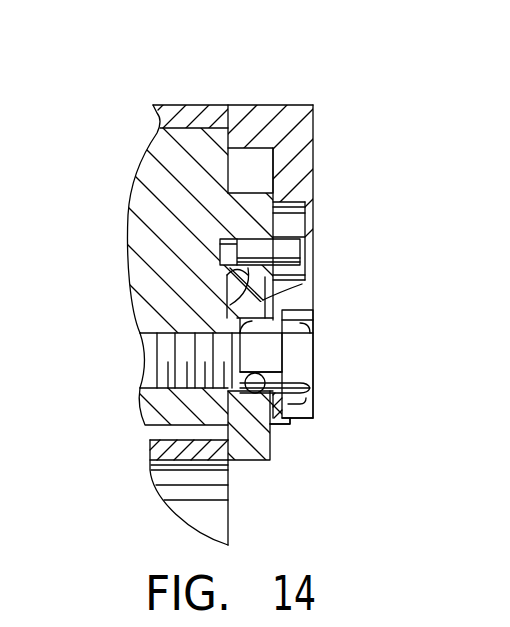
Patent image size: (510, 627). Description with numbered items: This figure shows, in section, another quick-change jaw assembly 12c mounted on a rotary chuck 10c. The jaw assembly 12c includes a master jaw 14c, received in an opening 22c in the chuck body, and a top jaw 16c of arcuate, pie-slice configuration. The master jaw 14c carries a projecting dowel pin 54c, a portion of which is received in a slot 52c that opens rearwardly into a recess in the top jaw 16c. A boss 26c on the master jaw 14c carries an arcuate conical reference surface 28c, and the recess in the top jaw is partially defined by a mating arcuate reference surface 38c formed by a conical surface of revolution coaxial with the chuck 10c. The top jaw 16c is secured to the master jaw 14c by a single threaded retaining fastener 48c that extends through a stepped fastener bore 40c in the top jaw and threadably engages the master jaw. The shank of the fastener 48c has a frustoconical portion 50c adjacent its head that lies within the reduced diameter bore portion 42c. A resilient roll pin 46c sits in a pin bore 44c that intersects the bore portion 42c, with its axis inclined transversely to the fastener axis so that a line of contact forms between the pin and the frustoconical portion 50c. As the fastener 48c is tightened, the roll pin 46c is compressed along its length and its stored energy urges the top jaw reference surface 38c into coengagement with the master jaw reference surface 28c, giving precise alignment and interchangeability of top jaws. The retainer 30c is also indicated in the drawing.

The rotary chuck 10c is at (176, 76).
The jaw assembly 12c is at (342, 72).
The master jaw 14c is at (118, 150).
The top jaw 16c is at (340, 132).
The opening 22c is at (152, 438).
The boss 26c is at (253, 193).
The reference surface 28c is at (142, 332).
The retaining ring 30c is at (288, 418).
The reference surface 38c is at (227, 275).
The stepped fastener bore 40c is at (302, 408).
The reduced diameter bore portion 42c is at (258, 393).
The pin bore 44c is at (273, 282).
The resilient pin 46c is at (267, 322).
The threaded retaining fastener 48c is at (302, 363).
The frustoconical portion 50c is at (268, 345).
The slot 52c is at (297, 223).
The dowel pin 54c is at (290, 250).